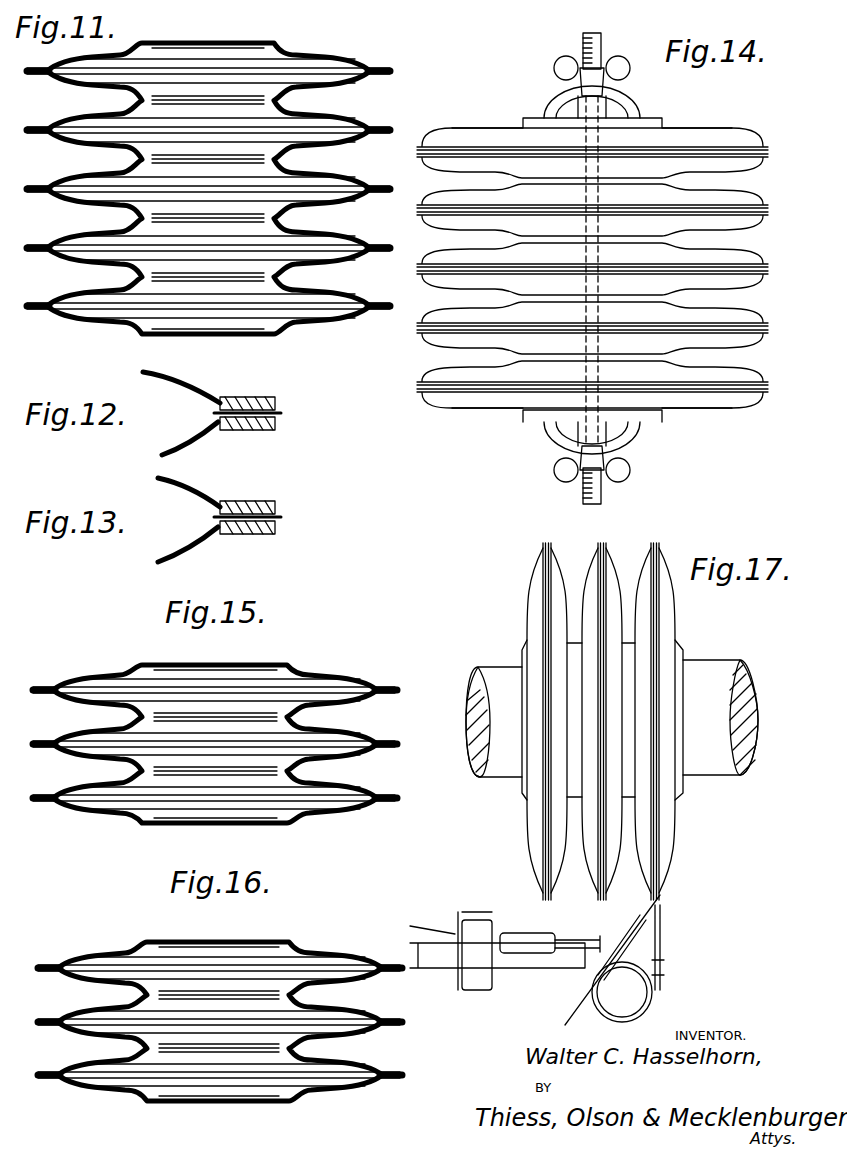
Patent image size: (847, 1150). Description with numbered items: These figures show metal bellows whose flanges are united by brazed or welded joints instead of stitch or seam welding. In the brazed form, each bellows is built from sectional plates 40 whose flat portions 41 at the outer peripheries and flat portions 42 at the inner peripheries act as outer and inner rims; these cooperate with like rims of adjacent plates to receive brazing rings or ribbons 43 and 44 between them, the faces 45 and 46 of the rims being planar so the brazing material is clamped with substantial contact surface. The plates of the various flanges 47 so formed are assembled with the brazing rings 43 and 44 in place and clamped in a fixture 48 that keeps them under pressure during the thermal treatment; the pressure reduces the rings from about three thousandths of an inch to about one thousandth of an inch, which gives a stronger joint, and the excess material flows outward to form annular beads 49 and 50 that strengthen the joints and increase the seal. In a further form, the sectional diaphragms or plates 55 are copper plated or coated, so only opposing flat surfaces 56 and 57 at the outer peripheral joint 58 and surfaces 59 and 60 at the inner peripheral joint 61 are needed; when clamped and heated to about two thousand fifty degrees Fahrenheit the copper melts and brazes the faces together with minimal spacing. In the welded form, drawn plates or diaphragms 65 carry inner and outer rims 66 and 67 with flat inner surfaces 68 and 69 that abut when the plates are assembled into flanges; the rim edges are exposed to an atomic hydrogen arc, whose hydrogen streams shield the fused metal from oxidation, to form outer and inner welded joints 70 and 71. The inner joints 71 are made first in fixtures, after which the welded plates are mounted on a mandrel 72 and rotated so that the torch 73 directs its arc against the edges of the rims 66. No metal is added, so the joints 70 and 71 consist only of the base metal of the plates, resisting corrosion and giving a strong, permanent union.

In FIG. 11, the plates 40 is at (325, 54).
In FIG. 12, the plates 40 is at (188, 378).
In FIG. 13, the plates 40 is at (200, 548).
In FIG. 14, the plates 40 is at (484, 156).
In FIG. 11, the flat portions at the outer peripheries 41 is at (373, 68).
In FIG. 12, the flat portions at the outer peripheries 41 is at (240, 410).
In FIG. 13, the flat portions at the outer peripheries 41 is at (241, 514).
In FIG. 14, the flat portions at the outer peripheries 41 is at (700, 150).
In FIG. 11, the flat portions at the inner peripheries 42 is at (264, 97).
In FIG. 11, the brazing ring 43 is at (390, 72).
In FIG. 12, the brazing ring 43 is at (270, 398).
In FIG. 13, the brazing ring 43 is at (270, 502).
In FIG. 14, the brazing ring 43 is at (738, 150).
In FIG. 11, the brazing ring 44 is at (130, 92).
In FIG. 14, the brazing ring 44 is at (680, 176).
In FIG. 11, the faces of outer rims 45 is at (389, 67).
In FIG. 11, the faces of inner rims 46 is at (282, 92).
In FIG. 11, the flanges 47 is at (362, 148).
In FIG. 14, the flanges 47 is at (755, 168).
In FIG. 14, the fixture 48 is at (583, 45).
In FIG. 11, the annular bead 49 is at (388, 128).
In FIG. 13, the annular bead 49 is at (283, 517).
In FIG. 11, the annular bead 50 is at (287, 170).
In FIG. 15, the sectional diaphragms or plates 55 is at (318, 671).
In FIG. 15, the opposing flat surface 56 is at (383, 688).
In FIG. 15, the opposing flat surface 57 is at (386, 692).
In FIG. 15, the outer peripheral joint 58 is at (240, 730).
In FIG. 15, the opposing flat surface 59 is at (275, 718).
In FIG. 15, the opposing flat surface 60 is at (285, 724).
In FIG. 15, the inner peripheral joint 61 is at (293, 771).
In FIG. 16, the plates or diaphragms 65 is at (332, 960).
In FIG. 17, the plates or diaphragms 65 is at (555, 598).
In FIG. 16, the outer rim 66 is at (375, 956).
In FIG. 17, the outer rim 66 is at (665, 552).
In FIG. 16, the inner rim 67 is at (277, 940).
In FIG. 16, the flat inner surface 68 is at (52, 965).
In FIG. 16, the flat inner surface 69 is at (286, 994).
In FIG. 16, the outer welded joint 70 is at (401, 1020).
In FIG. 17, the outer welded joint 70 is at (650, 552).
In FIG. 16, the inner welded joint 71 is at (270, 1047).
In FIG. 17, the mandrel 72 is at (730, 668).
In FIG. 17, the torch 73 is at (550, 975).